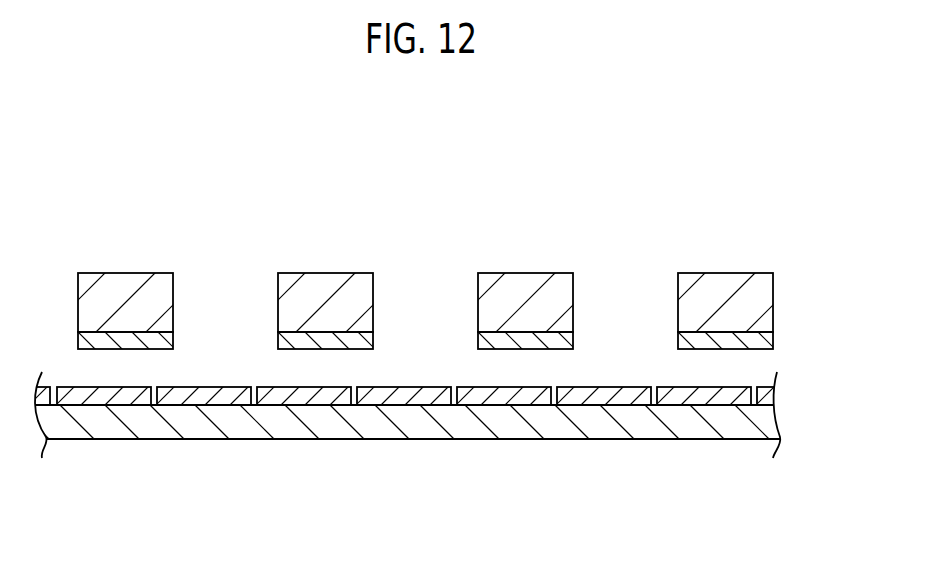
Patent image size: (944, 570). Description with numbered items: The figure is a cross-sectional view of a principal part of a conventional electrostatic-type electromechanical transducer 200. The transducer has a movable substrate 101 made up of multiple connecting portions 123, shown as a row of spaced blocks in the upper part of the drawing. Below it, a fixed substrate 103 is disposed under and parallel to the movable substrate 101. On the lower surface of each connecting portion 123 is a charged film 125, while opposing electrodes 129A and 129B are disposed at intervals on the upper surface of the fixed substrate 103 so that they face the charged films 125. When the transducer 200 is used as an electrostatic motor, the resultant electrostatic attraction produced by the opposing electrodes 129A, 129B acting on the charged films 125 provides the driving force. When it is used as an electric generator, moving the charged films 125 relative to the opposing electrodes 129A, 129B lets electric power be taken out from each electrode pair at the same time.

The electrostatic-type electromechanical transducer 200 is at (665, 123).
The movable substrate 101 is at (795, 323).
The connecting portions 123 is at (118, 287).
The charged films 125 is at (155, 338).
The fixed substrate 103 is at (732, 427).
The opposing electrode 129A is at (103, 397).
The opposing electrode 129B is at (205, 397).